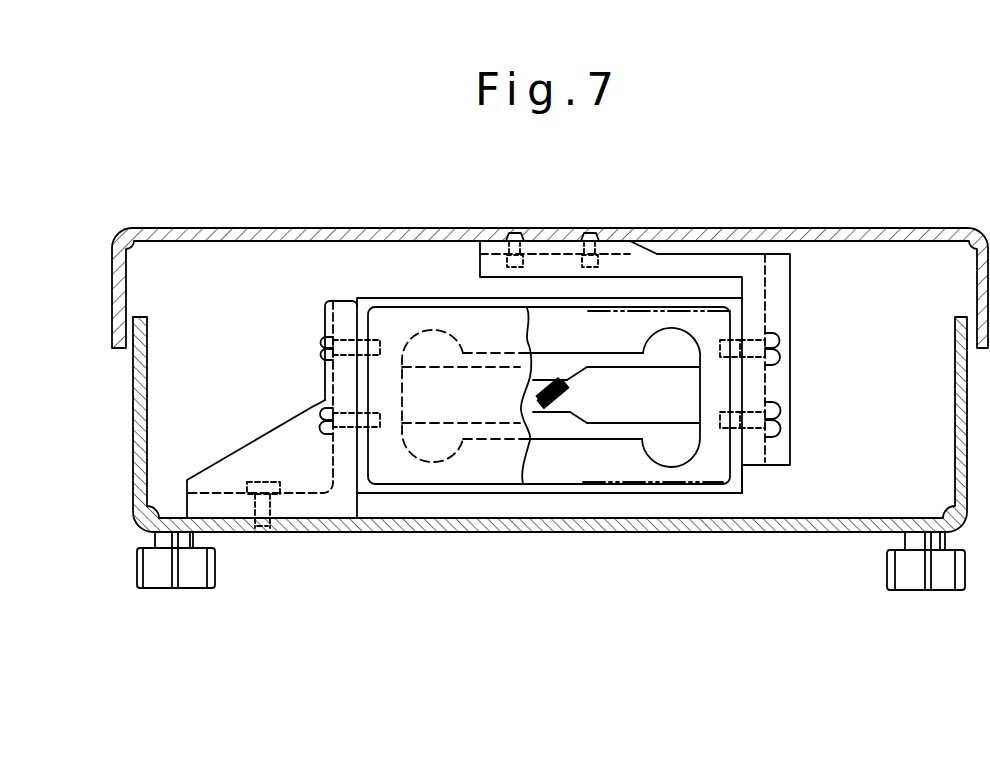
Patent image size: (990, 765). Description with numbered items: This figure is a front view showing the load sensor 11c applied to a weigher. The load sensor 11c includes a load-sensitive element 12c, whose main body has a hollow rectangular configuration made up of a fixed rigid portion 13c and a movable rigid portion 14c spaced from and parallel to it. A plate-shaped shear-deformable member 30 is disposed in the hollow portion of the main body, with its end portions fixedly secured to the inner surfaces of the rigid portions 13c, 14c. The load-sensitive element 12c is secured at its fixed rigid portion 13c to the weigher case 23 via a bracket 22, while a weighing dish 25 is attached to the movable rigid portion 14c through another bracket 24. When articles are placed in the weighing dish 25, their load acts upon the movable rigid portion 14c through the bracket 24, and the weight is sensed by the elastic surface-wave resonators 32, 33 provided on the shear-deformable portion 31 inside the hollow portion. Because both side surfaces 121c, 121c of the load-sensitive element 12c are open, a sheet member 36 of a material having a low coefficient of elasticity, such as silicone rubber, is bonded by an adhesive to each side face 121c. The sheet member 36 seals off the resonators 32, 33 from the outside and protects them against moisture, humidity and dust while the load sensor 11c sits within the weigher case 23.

The weighing dish 25 is at (652, 228).
The bracket 24 is at (780, 395).
The load sensor 11c is at (428, 300).
The load-sensitive element 12c is at (558, 495).
The fixed rigid portion 13c is at (370, 486).
The movable rigid portion 14c is at (733, 488).
The side surface 121c is at (618, 472).
The sheet member 36 is at (500, 470).
The bracket 22 is at (300, 432).
The weigher case 23 is at (415, 523).
The shear-deformable member 30 is at (602, 372).
The shear-deformable portion 31 is at (547, 381).
The elastic surface-wave resonator 32 is at (604, 392).
The elastic surface-wave resonator 33 is at (567, 396).